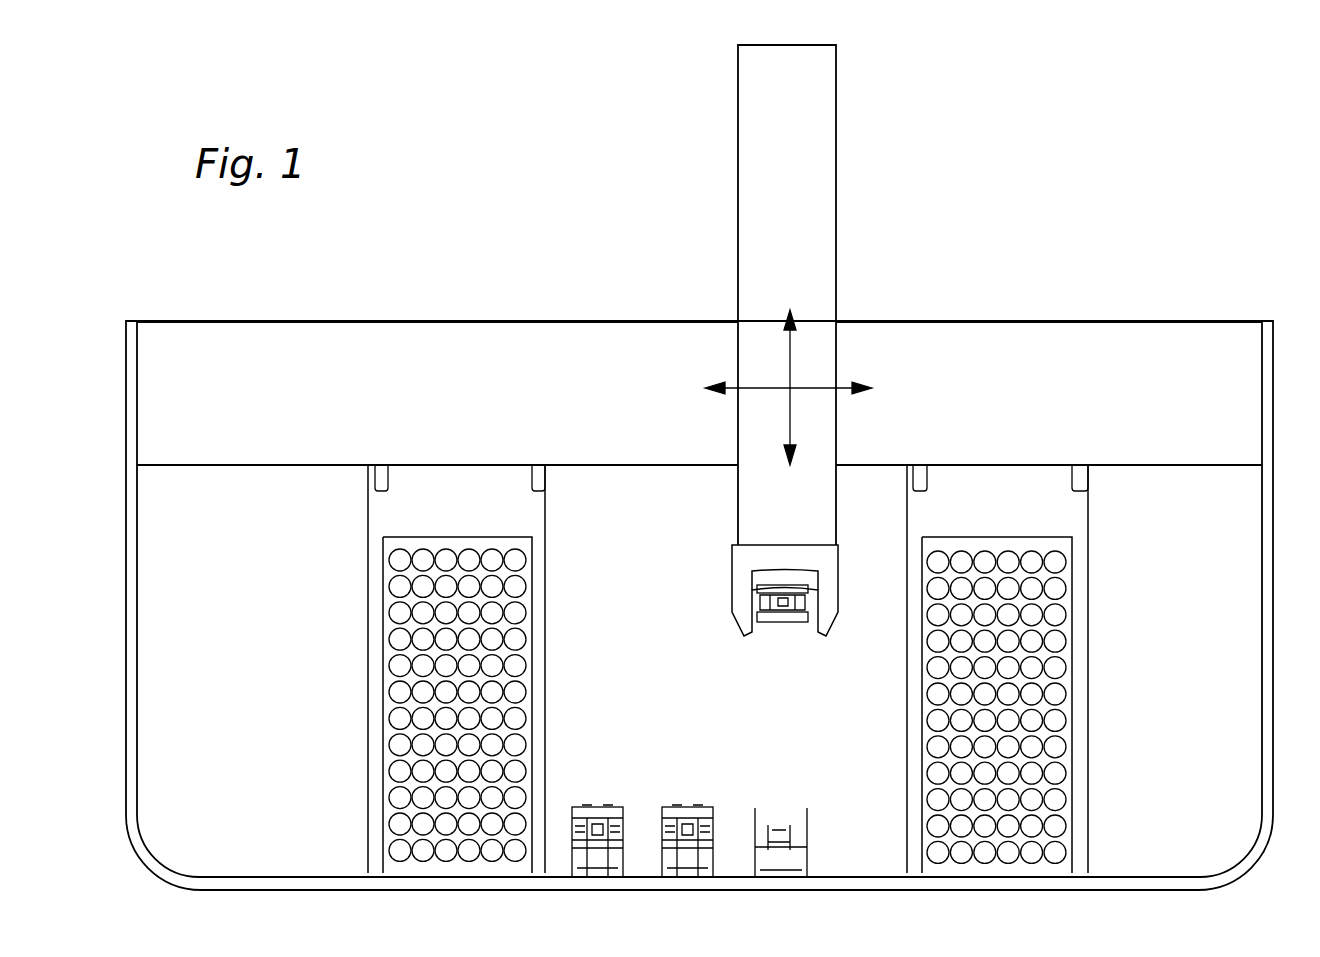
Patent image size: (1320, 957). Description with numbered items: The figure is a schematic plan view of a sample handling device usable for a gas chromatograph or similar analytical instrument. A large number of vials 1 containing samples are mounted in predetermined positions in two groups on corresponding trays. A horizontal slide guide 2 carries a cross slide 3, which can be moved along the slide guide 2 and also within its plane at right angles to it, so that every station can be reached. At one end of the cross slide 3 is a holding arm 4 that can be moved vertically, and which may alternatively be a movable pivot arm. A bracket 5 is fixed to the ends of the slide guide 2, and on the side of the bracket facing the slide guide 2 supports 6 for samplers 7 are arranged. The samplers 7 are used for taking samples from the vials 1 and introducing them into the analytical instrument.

The vials 1 is at (1064, 592).
The slide guide 2 is at (1033, 345).
The cross slide 3 is at (823, 273).
The holding arm 4 is at (742, 568).
The bracket 5 is at (1262, 633).
The supports 6 is at (810, 840).
The samplers 7 is at (790, 630).